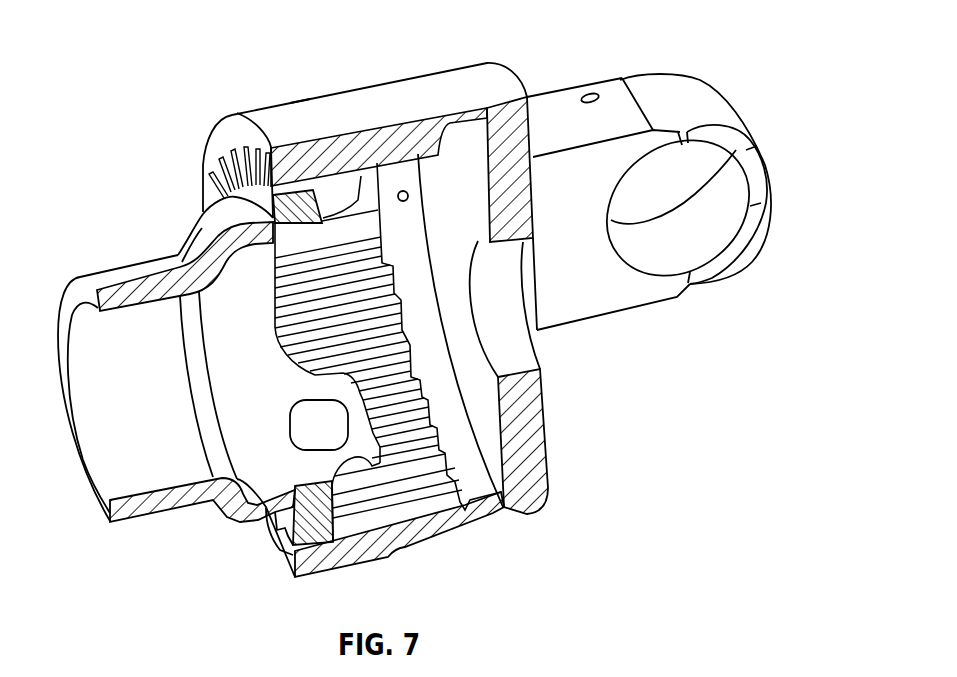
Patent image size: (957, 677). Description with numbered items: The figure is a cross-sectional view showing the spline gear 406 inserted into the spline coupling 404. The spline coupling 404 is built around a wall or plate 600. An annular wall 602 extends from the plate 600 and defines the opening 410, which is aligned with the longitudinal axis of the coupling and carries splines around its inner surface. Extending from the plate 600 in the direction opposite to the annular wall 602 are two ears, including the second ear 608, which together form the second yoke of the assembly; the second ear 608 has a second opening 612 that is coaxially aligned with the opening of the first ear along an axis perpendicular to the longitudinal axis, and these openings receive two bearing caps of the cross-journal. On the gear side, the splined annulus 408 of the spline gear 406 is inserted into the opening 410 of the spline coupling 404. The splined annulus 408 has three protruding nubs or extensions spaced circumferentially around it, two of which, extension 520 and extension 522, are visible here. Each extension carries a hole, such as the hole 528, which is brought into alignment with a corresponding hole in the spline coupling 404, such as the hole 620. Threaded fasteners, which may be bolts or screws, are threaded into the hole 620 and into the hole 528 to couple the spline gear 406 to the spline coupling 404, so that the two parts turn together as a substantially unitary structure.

The spline coupling 404 is at (403, 92).
The spline gear 406 is at (123, 277).
The splined annulus 408 is at (215, 177).
The opening 410 is at (439, 534).
The extension 520 is at (360, 174).
The extension 522 is at (353, 443).
The hole 528 is at (304, 458).
The plate 600 is at (528, 100).
The annular wall 602 is at (430, 87).
The second ear 608 is at (694, 110).
The second opening 612 is at (734, 200).
The hole 620 is at (296, 95).